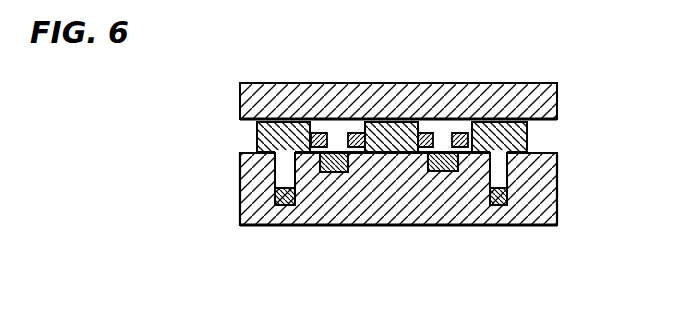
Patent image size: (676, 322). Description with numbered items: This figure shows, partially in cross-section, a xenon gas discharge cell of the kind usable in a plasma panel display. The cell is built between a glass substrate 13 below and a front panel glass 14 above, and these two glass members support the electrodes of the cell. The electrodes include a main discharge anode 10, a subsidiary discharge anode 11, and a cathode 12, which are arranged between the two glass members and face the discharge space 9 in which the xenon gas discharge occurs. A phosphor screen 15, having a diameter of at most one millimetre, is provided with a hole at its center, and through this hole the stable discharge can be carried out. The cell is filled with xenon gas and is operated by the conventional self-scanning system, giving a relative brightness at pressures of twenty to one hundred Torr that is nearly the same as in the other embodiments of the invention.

The discharge space 9 is at (340, 131).
The main discharge anode 10 is at (346, 172).
The subsidiary discharge anode 11 is at (276, 201).
The cathode 12 is at (257, 135).
The glass substrate 13 is at (552, 206).
The front panel glass 14 is at (557, 103).
The phosphor screen 15 is at (326, 124).